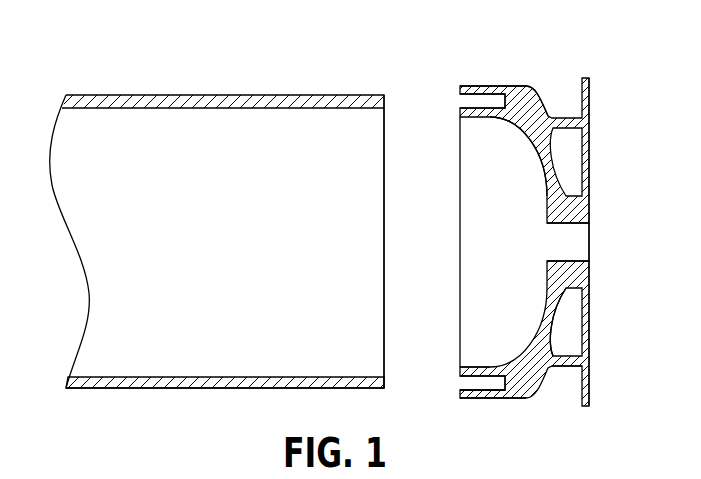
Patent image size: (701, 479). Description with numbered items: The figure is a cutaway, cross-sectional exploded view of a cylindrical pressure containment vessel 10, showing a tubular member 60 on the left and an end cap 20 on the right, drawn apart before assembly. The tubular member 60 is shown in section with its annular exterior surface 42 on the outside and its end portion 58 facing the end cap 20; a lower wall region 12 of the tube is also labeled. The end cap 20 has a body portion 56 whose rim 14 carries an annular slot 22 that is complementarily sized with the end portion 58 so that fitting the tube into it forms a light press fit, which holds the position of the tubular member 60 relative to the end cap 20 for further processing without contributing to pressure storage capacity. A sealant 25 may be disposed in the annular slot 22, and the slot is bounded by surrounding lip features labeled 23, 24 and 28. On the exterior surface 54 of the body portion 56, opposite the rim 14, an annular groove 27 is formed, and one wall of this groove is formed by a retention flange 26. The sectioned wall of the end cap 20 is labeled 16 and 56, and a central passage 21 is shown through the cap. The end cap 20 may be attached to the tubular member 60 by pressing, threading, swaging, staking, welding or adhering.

The cylindrical pressure containment vessel 10 is at (88, 80).
The tube bottom wall 12 is at (358, 389).
The rim 14 is at (494, 388).
The curved wall 16 is at (560, 172).
The end cap 20 is at (448, 396).
The bore 21 is at (577, 238).
The annular slot 22 is at (466, 382).
The lip bottom surface 23 is at (472, 399).
The groove side wall 24 is at (468, 367).
The sealant 25 is at (494, 97).
The retention flange 26 is at (588, 387).
The annular groove 27 is at (555, 366).
The upper lip 28 is at (480, 86).
The annular exterior surface 42 is at (275, 96).
The exterior surface 54 is at (540, 103).
The body portion 56 is at (578, 308).
The end portion 58 is at (353, 94).
The tubular member 60 is at (181, 85).